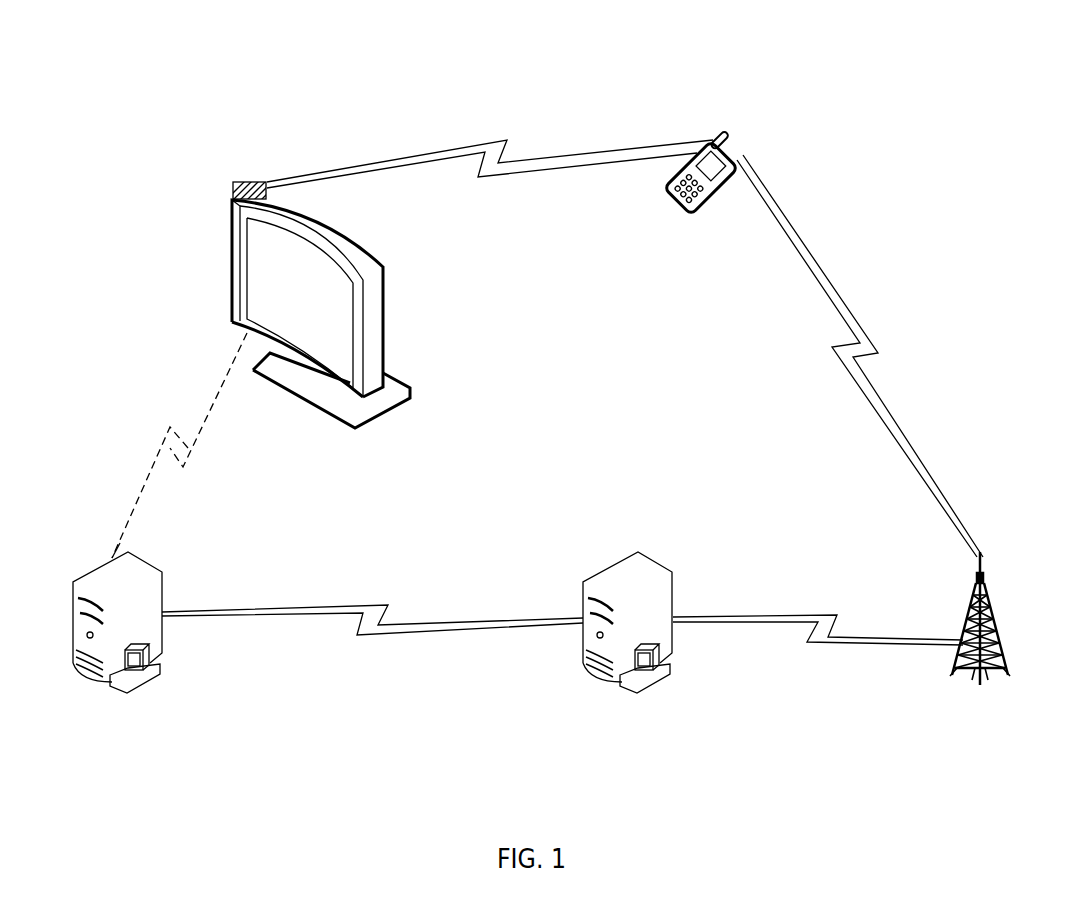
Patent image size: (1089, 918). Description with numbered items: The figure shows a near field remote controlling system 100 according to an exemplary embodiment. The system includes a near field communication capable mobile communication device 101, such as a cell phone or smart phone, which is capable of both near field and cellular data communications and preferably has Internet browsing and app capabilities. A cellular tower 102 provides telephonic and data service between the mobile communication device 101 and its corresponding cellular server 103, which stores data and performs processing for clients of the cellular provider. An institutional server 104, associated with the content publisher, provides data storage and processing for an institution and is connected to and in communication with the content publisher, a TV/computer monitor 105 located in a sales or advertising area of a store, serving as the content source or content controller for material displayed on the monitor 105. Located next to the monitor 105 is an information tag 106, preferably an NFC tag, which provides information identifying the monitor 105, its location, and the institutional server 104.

The near field remote controlling system 100 is at (597, 36).
The mobile communication device 101 is at (737, 150).
The cellular tower 102 is at (986, 560).
The cellular server 103 is at (673, 572).
The institutional server 104 is at (163, 572).
The content publisher monitor 105 is at (386, 346).
The information tag 106 is at (233, 197).